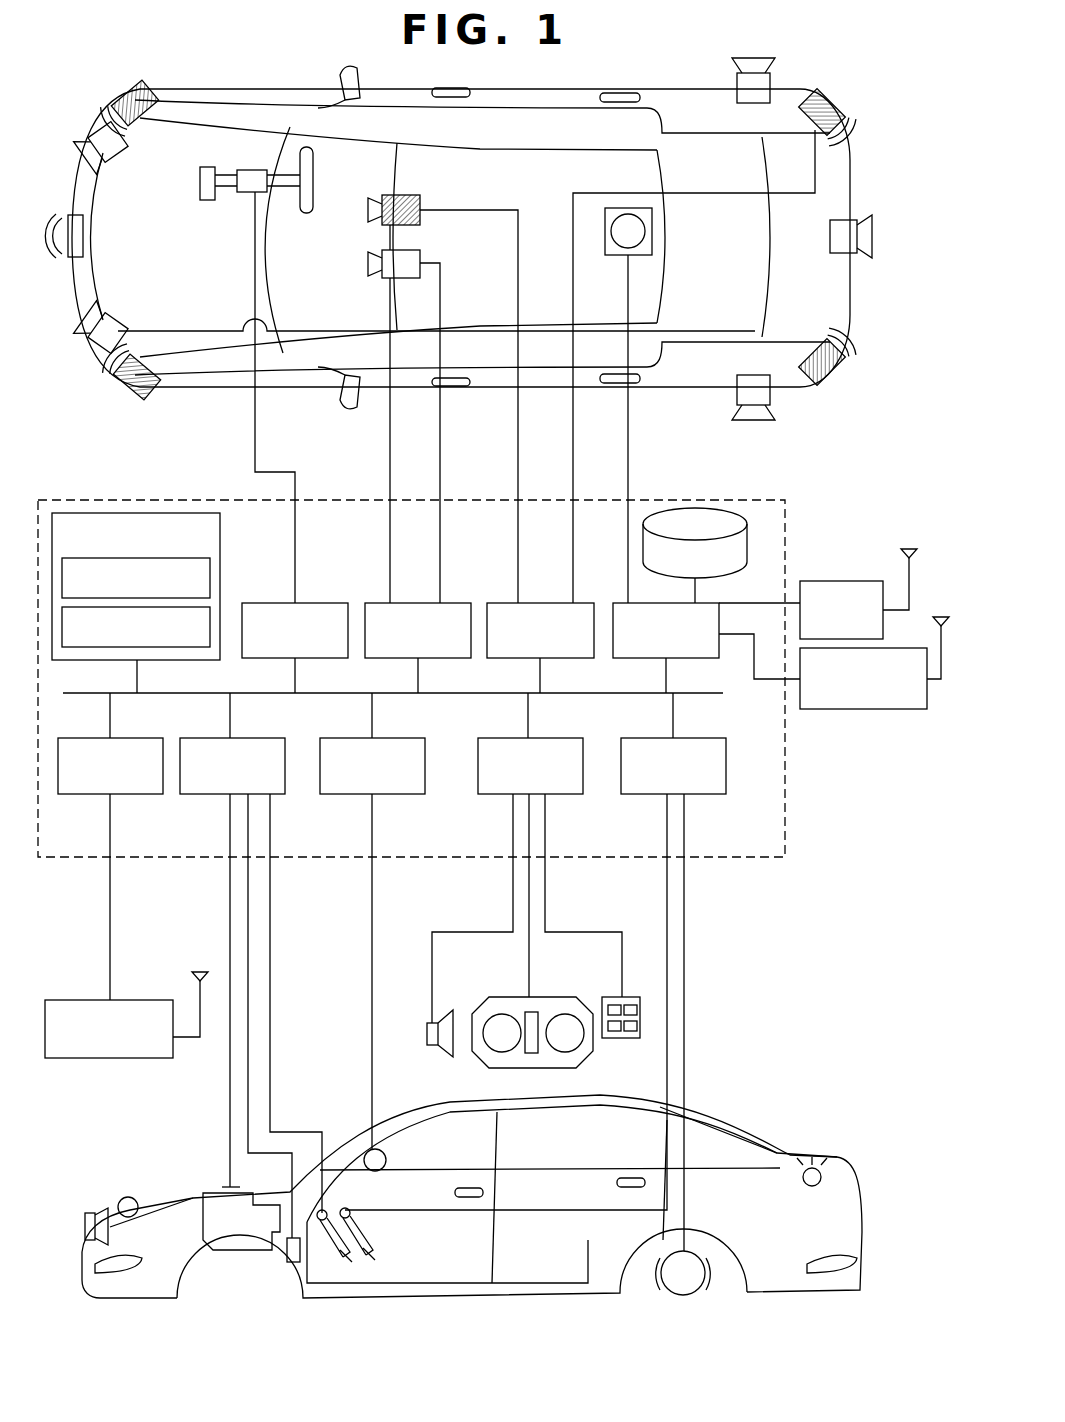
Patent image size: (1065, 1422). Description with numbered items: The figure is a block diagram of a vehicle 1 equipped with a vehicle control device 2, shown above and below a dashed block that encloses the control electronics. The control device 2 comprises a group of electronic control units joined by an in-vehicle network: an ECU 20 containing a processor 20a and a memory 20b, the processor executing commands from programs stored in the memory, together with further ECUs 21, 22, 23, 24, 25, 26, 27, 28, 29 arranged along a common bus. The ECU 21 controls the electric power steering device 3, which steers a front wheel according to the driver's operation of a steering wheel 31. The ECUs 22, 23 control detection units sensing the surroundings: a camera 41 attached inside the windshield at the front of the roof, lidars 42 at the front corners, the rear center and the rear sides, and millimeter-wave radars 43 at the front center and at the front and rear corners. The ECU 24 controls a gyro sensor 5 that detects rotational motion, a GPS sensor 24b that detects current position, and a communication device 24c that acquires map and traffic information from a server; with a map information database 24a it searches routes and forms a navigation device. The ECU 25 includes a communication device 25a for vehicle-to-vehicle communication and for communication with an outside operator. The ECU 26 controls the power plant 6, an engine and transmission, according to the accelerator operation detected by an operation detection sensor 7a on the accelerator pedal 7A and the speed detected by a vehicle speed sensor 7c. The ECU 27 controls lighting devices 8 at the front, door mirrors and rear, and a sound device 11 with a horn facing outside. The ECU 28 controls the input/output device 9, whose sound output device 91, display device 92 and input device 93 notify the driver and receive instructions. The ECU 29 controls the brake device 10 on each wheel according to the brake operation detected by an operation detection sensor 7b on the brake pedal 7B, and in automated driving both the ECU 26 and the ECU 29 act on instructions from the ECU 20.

The vehicle 1 is at (866, 146).
The vehicle control device 2 is at (762, 858).
The electric power steering device 3 is at (208, 200).
The gyro sensor 5 is at (652, 231).
The power plant 6 is at (198, 1185).
The operation detection sensor 7a is at (330, 1195).
The accelerator pedal 7A is at (370, 1260).
The operation detection sensor 7b is at (345, 1210).
The brake pedal 7B is at (355, 1258).
The vehicle speed sensor 7c is at (294, 1262).
The lighting devices 8 is at (118, 1200).
The input/output device 9 is at (523, 1043).
The brake device 10 is at (690, 1295).
The sound device 11 is at (80, 1222).
The ECU 20 is at (168, 558).
The processor 20a is at (210, 578).
The memory 20b is at (210, 627).
The ECU 21 is at (326, 603).
The ECU 22 is at (418, 603).
The ECU 23 is at (546, 603).
The ECU 24 is at (612, 603).
The map information database 24a is at (696, 508).
The GPS sensor 24b is at (846, 581).
The communication device 24c is at (852, 709).
The ECU 25 is at (138, 794).
The communication device 25a is at (110, 1058).
The ECU 26 is at (215, 794).
The ECU 27 is at (400, 794).
The ECU 28 is at (565, 794).
The ECU 29 is at (705, 794).
The steering wheel 31 is at (306, 213).
The camera 41 is at (420, 214).
The lidar 42 is at (118, 160).
The millimeter-wave radar 43 is at (142, 120).
The sound output device 91 is at (427, 1030).
The display device 92 is at (490, 1012).
The input device 93 is at (620, 1038).